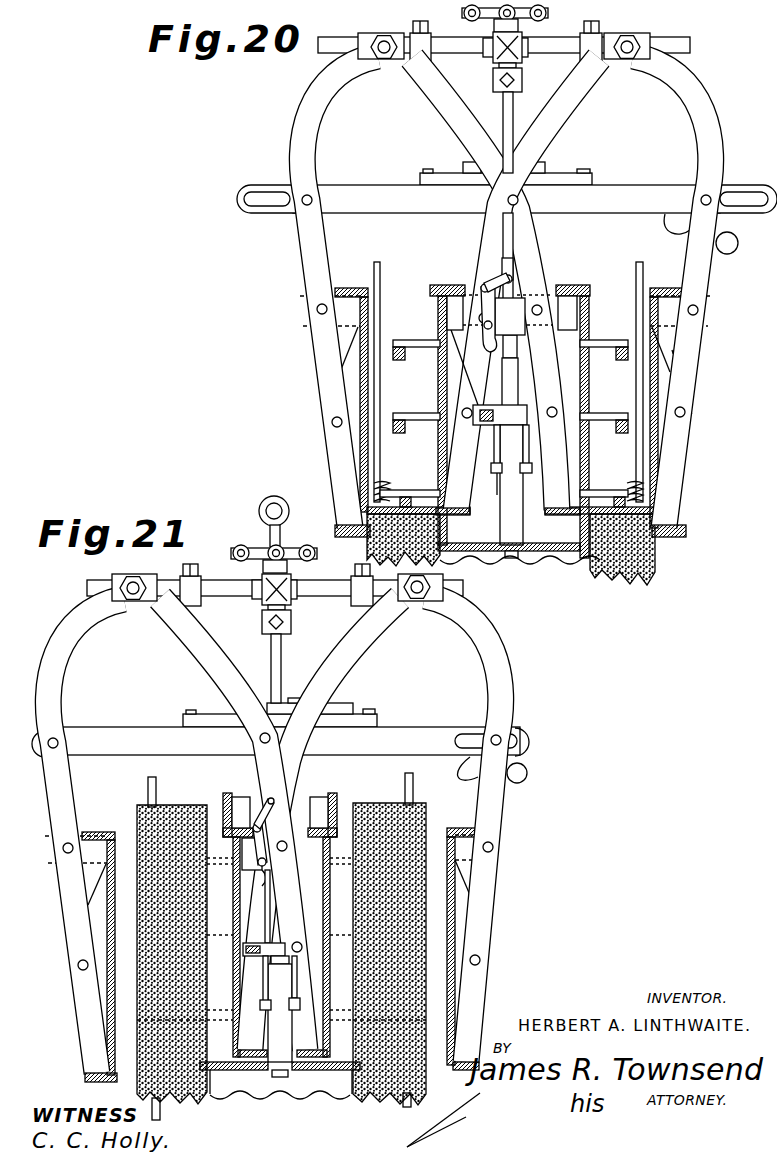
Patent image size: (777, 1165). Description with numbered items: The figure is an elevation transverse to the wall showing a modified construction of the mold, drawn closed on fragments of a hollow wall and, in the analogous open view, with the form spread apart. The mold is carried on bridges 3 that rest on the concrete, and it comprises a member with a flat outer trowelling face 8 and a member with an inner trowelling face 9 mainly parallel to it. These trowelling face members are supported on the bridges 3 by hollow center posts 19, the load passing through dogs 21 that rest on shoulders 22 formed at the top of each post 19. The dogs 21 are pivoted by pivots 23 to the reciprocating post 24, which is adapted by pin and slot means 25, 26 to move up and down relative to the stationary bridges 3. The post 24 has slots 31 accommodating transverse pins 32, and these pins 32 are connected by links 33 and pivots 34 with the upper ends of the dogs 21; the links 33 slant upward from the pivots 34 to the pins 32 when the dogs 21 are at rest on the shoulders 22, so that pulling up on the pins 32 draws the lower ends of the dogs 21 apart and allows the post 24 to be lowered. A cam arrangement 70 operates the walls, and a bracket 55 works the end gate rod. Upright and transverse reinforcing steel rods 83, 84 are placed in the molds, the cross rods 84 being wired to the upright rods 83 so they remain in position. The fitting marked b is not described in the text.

In FIG. 20, the bridge 3 is at (556, 552).
In FIG. 21, the bridge 3 is at (327, 1062).
In FIG. 20, the outer trowelling face member 8 is at (368, 313).
In FIG. 21, the outer trowelling face member 8 is at (115, 832).
In FIG. 20, the inner trowelling face member 9 is at (446, 446).
In FIG. 21, the inner trowelling face member 9 is at (233, 962).
In FIG. 20, the hollow center post 19 is at (505, 526).
In FIG. 21, the hollow center post 19 is at (280, 1009).
In FIG. 20, the dog 21 is at (486, 345).
In FIG. 21, the dog 21 is at (266, 876).
In FIG. 20, the shoulder 22 is at (518, 338).
In FIG. 20, the pivot 23 is at (485, 337).
In FIG. 21, the pivot 23 is at (258, 861).
In FIG. 20, the reciprocating post 24 is at (513, 107).
In FIG. 21, the reciprocating post 24 is at (279, 654).
In FIG. 20, the pin and slot means 25 is at (496, 470).
In FIG. 21, the pin and slot means 25 is at (265, 1002).
In FIG. 20, the pin and slot means 26 is at (527, 478).
In FIG. 21, the pin and slot means 26 is at (240, 1043).
In FIG. 20, the slot 31 is at (511, 260).
In FIG. 20, the transverse pin 32 is at (512, 277).
In FIG. 20, the link 33 is at (484, 284).
In FIG. 21, the link 33 is at (257, 824).
In FIG. 20, the pivot 34 is at (482, 288).
In FIG. 21, the pivot 34 is at (261, 828).
In FIG. 20, the bracket 55 is at (487, 423).
In FIG. 21, the bracket 55 is at (262, 942).
In FIG. 20, the cam arrangement 70 is at (548, 168).
In FIG. 21, the cam arrangement 70 is at (343, 702).
In FIG. 20, the upright reinforcing steel rod 83 is at (374, 273).
In FIG. 21, the upright reinforcing steel rod 83 is at (148, 790).
In FIG. 20, the transverse reinforcing steel rod 84 is at (409, 416).
In FIG. 20, the valve b is at (490, 60).
In FIG. 21, the valve b is at (258, 602).